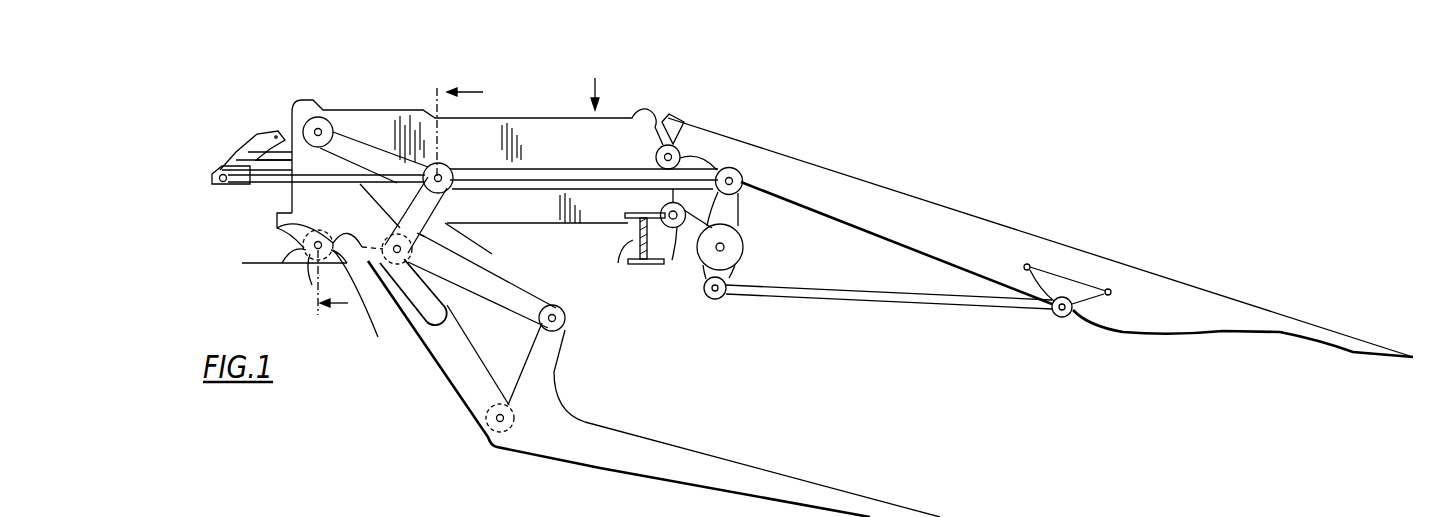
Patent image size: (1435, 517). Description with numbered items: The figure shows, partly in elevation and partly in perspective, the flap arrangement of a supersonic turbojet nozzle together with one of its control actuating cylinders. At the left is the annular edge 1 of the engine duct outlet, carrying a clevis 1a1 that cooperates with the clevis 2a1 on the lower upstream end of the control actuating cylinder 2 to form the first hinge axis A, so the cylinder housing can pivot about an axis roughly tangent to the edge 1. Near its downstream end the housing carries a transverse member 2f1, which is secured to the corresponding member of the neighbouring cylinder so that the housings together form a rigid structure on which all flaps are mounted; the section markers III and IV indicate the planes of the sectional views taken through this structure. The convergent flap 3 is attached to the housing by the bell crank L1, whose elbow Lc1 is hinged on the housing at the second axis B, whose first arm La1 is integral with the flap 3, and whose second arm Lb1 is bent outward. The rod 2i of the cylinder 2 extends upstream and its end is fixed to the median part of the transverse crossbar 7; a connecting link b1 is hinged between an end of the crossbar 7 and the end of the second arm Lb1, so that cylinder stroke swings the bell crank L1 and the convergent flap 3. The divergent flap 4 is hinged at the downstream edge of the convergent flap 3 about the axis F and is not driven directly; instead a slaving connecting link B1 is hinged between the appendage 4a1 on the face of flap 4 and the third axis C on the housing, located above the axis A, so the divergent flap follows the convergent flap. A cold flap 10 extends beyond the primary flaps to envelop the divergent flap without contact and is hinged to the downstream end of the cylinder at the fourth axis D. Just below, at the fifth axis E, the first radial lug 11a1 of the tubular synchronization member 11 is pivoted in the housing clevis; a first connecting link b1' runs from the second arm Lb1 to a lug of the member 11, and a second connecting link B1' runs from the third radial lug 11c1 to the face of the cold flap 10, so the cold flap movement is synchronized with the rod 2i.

The annular edge of duct outlet 1 is at (255, 262).
The control actuating cylinder 2 is at (381, 102).
The rod of control actuating cylinder 2i is at (253, 165).
The transverse crossbar 7 is at (226, 156).
The connecting link b1 is at (326, 205).
The clevis of cylinder housing 2a1 is at (276, 265).
The first hinge axis A is at (304, 263).
The clevis fixed to annular edge 1a1 is at (341, 285).
The third axis C is at (318, 128).
The second arm of bell crank Lb1 is at (448, 196).
The elbow of bell crank Lc1 is at (385, 230).
The bell crank L1 is at (419, 232).
The second axis B is at (417, 260).
The first arm of bell crank La1 is at (440, 310).
The slaving connecting link B1 is at (486, 282).
The convergent flap 3 is at (452, 394).
The pivot axis of divergent flap F is at (503, 425).
The divergent flap 4 is at (620, 447).
The appendage of divergent flap 4a1 is at (552, 353).
The first connecting link b1' is at (596, 162).
The fourth axis D is at (682, 123).
The cold flap 10 is at (908, 192).
The tubular synchronization member 11 is at (747, 247).
The first radial lug 11a1 is at (690, 258).
The third radial lug 11c1 is at (740, 272).
The second connecting link B1' is at (1022, 305).
The fifth hinge axis E is at (670, 242).
The transverse member 2f1 is at (629, 259).
The section line III is at (380, 199).
The section line IV is at (607, 93).